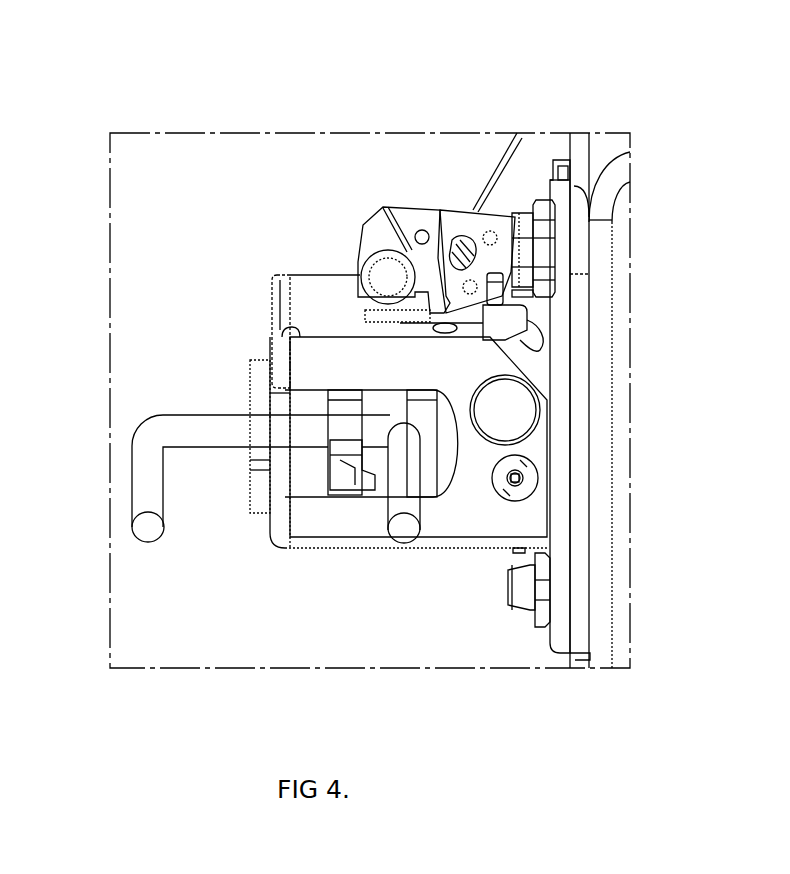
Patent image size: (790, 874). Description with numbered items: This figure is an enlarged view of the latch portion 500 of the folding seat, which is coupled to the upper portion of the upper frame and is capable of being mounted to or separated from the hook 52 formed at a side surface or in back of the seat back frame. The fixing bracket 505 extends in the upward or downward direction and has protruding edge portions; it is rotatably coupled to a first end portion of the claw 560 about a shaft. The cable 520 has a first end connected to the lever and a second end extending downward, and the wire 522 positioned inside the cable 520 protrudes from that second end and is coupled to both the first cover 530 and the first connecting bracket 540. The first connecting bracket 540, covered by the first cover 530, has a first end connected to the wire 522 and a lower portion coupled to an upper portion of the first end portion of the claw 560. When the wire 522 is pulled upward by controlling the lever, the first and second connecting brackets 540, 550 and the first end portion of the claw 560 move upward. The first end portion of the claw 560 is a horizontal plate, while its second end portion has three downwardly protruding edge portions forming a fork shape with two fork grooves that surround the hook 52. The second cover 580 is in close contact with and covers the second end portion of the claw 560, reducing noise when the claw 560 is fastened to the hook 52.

The latch portion 500 is at (157, 100).
The fixing bracket 505 is at (577, 350).
The cable 520 is at (537, 78).
The wire 522 is at (516, 133).
The first cover 530 is at (450, 208).
The first connecting bracket 540 is at (373, 228).
The second connecting bracket 550 is at (365, 292).
The claw 560 is at (345, 328).
The hook 52 is at (140, 440).
The second cover 580 is at (342, 473).